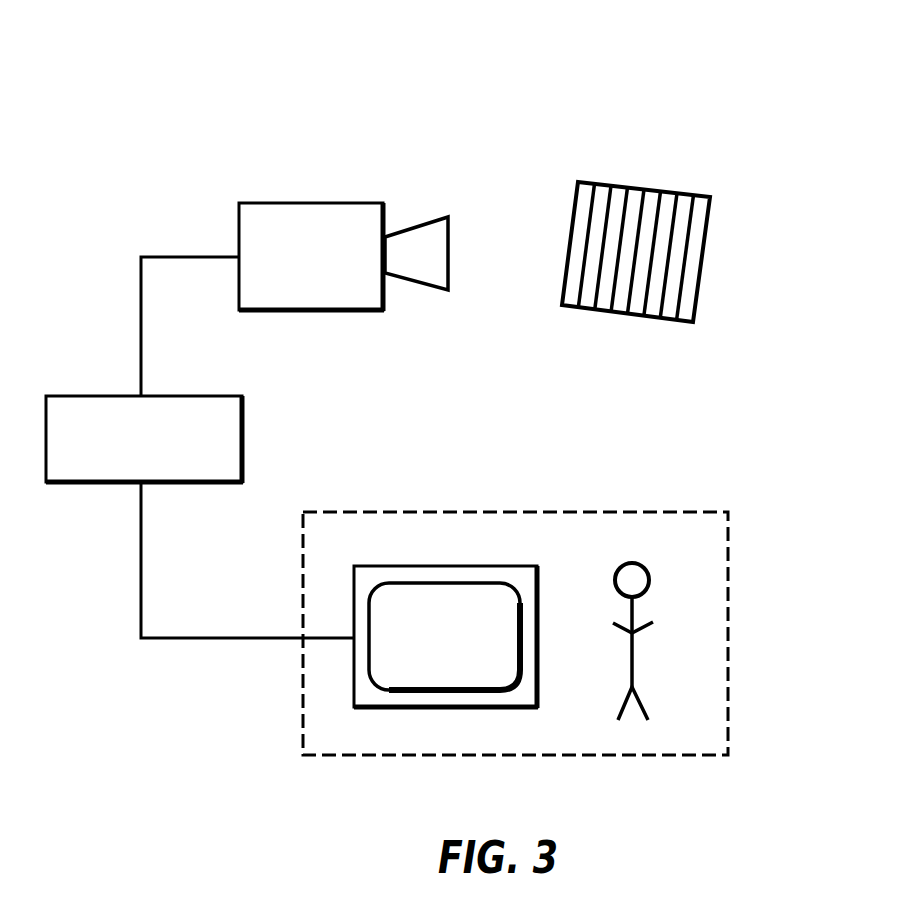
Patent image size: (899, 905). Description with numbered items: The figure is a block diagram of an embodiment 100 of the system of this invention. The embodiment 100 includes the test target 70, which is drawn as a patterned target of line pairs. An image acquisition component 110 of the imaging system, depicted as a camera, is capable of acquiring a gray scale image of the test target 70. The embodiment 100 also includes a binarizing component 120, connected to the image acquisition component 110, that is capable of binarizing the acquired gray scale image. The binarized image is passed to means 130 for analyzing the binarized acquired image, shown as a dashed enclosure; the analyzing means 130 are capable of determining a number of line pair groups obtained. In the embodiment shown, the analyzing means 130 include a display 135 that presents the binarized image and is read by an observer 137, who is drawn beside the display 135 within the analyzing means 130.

The embodiment of the system 100 is at (824, 78).
The image acquisition component 110 is at (300, 202).
The test target 70 is at (640, 188).
The binarizing component 120 is at (108, 395).
The means for analyzing the binarized acquired image 130 is at (292, 690).
The display 135 is at (433, 563).
The observer 137 is at (635, 665).